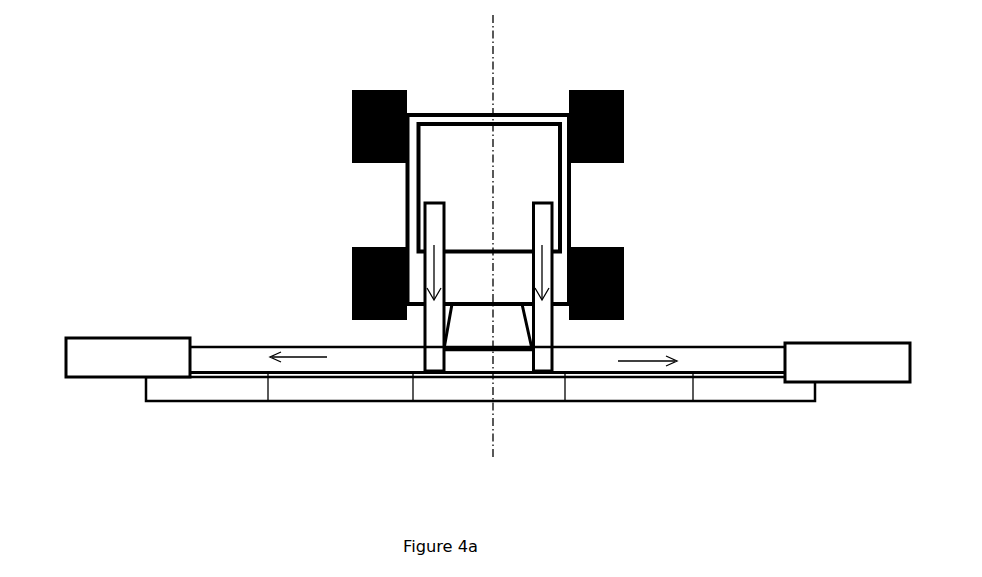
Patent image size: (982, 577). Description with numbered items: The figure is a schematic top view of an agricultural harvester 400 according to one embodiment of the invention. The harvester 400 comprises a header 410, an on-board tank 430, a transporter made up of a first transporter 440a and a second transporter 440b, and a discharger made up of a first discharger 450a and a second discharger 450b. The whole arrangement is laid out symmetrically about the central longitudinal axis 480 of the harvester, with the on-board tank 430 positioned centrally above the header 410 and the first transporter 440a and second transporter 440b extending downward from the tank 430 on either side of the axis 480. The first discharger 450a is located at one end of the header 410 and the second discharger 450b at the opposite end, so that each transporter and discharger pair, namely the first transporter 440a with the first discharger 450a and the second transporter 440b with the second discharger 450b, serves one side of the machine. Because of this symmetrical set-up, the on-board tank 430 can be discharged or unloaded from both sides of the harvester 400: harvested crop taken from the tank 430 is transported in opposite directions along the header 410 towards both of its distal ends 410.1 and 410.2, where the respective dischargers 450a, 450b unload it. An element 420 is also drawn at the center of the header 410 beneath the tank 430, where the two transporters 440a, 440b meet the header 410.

The agricultural harvester 400 is at (488, 246).
The central longitudinal axis 480 is at (490, 37).
The on-board tank 430 is at (437, 192).
The first transporter 440a is at (433, 222).
The second transporter 440b is at (683, 360).
The first discharger 450a is at (128, 352).
The second discharger 450b is at (822, 355).
The header 410 is at (363, 390).
The gripper head 420 is at (510, 335).
The distal end of the header 410.1 is at (771, 414).
The distal end of the header 410.2 is at (171, 407).